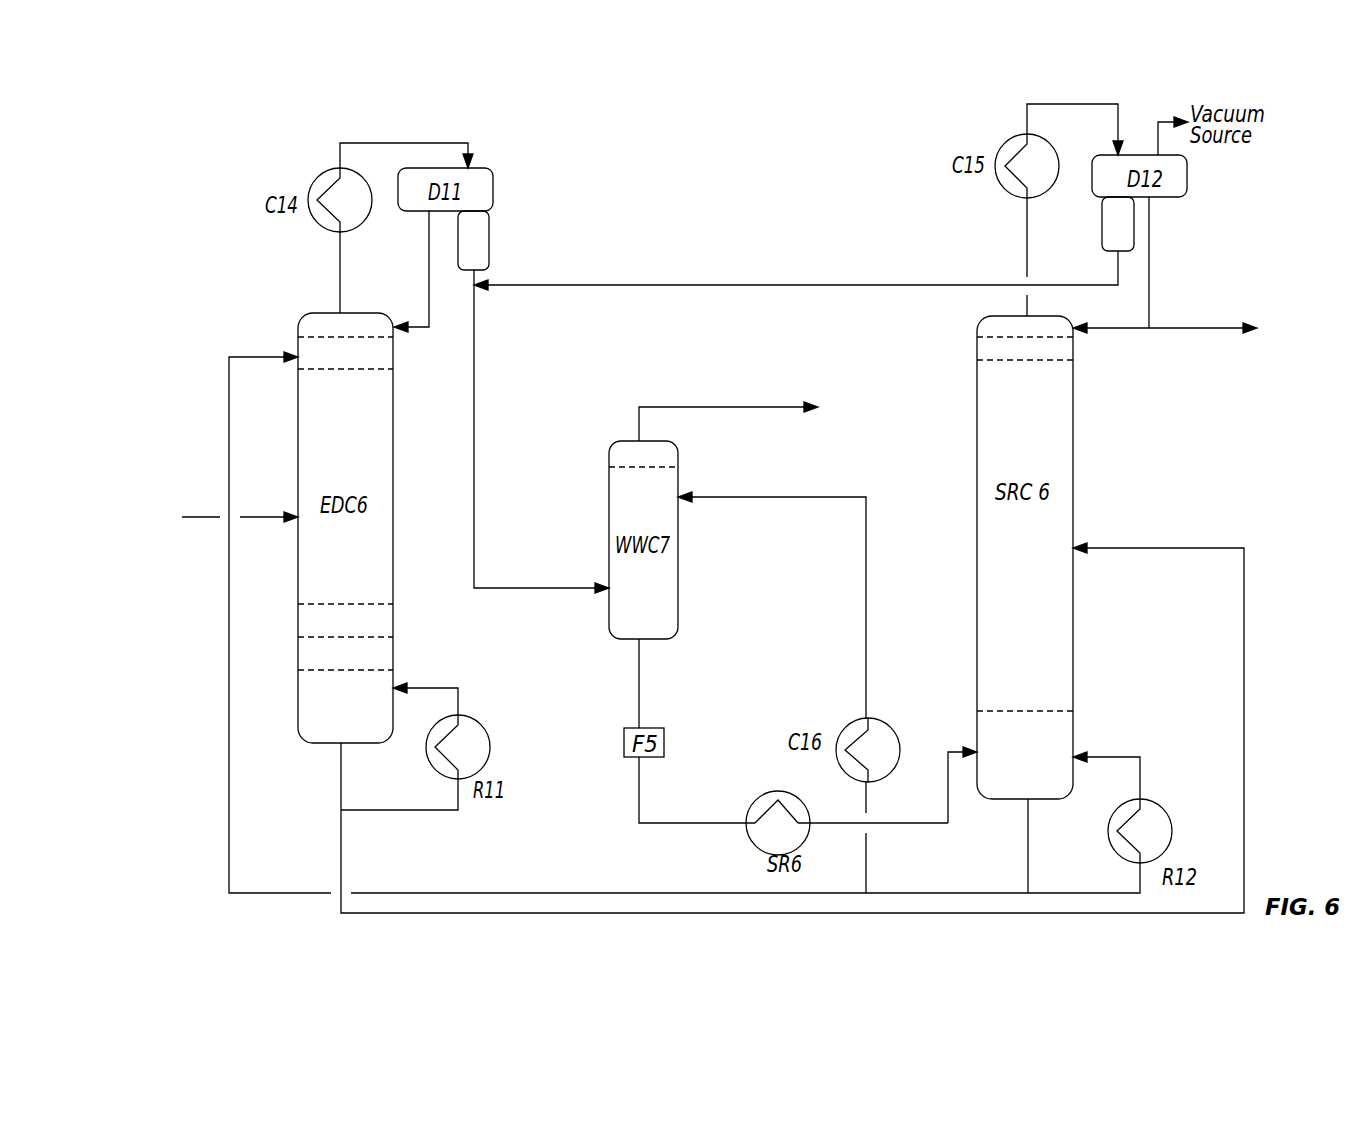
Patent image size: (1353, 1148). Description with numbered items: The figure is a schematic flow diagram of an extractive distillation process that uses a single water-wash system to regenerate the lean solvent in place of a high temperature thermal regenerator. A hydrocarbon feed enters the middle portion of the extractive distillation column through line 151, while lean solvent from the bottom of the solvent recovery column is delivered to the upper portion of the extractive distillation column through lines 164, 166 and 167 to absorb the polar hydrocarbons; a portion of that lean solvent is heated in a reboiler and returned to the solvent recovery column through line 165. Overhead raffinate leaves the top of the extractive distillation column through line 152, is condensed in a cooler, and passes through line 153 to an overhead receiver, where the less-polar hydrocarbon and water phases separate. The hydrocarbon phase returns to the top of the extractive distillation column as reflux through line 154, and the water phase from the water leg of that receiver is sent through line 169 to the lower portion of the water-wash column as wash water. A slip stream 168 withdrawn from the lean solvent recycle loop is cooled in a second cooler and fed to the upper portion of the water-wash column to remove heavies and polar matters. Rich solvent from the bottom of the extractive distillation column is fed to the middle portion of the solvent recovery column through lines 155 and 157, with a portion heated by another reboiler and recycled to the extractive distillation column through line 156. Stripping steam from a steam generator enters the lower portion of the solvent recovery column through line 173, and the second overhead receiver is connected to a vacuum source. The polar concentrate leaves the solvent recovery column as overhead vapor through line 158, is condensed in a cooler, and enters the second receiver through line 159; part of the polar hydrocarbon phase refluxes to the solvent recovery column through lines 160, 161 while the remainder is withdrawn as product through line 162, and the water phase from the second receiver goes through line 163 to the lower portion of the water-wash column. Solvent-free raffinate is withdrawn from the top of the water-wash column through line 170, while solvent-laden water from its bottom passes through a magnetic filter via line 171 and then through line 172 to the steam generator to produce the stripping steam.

The hydrocarbon feed line 151 is at (240, 506).
The overhead raffinate line 152 is at (320, 272).
The condensed raffinate transfer line 153 is at (406, 143).
The reflux line 154 is at (411, 271).
The rich solvent line 155 is at (550, 828).
The reboiler return line 156 is at (425, 687).
The rich solvent feed line 157 is at (1022, 717).
The overhead vapor line 158 is at (1008, 257).
The condensed overhead line 159 is at (1075, 129).
The polar hydrocarbon reflux line 160 is at (1169, 262).
The reflux line to SRC6 161 is at (1111, 316).
The polar hydrocarbon product line 162 is at (1203, 316).
The wash water line from D12 163 is at (796, 270).
The lean solvent bottoms line 164 is at (1049, 846).
The reboiler return line to SRC6 165 is at (1129, 775).
The lean solvent recycle line 166 is at (684, 746).
The lean solvent feed line 167 is at (263, 463).
The slip stream 168 is at (793, 692).
The wash water line from D11 169 is at (541, 431).
The solvent-free raffinate product line 170 is at (728, 411).
The solvent-laden water line 171 is at (662, 683).
The filtered water line 172 is at (793, 790).
The stripping steam line 173 is at (943, 785).